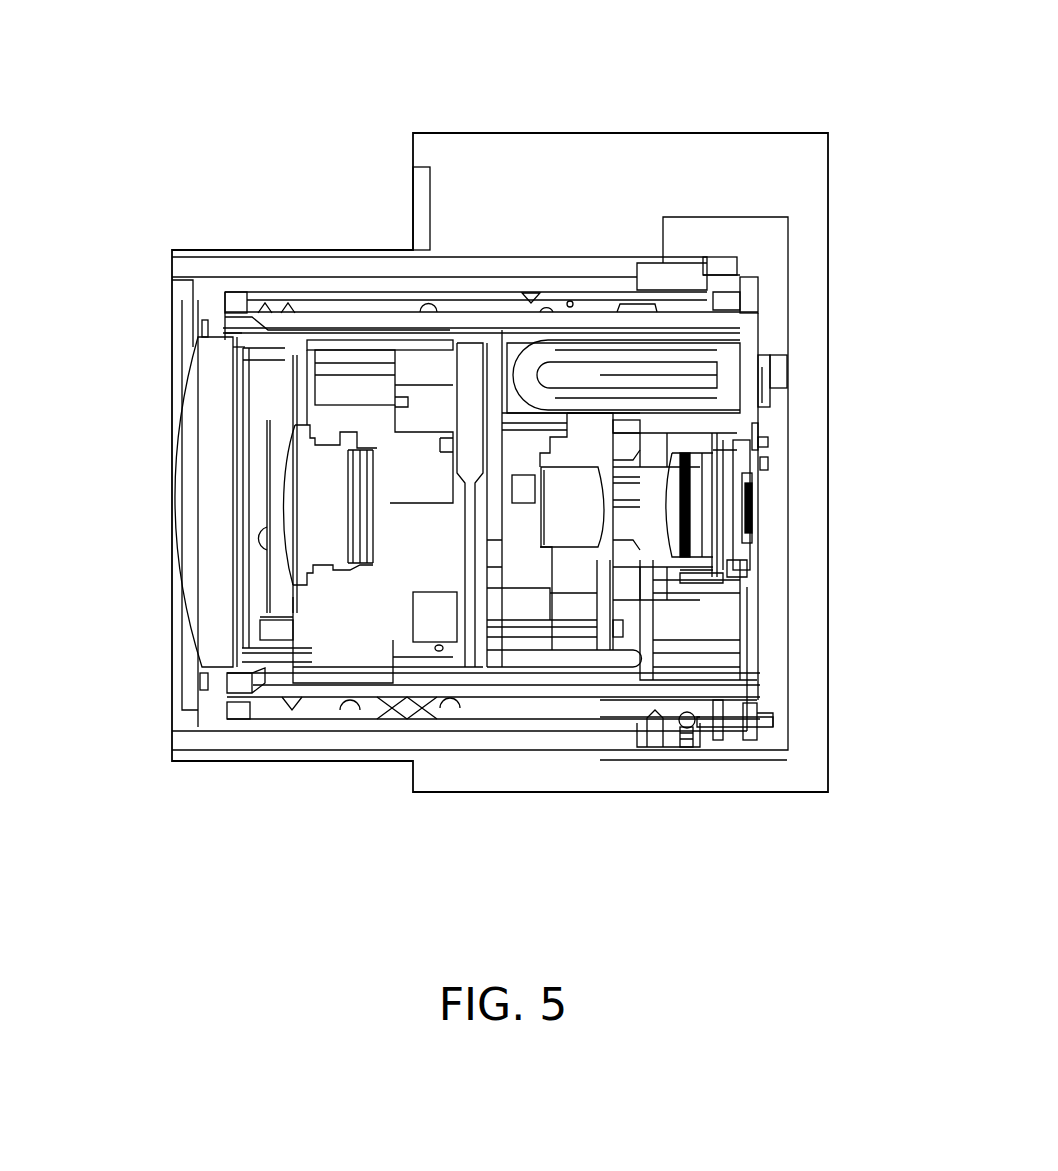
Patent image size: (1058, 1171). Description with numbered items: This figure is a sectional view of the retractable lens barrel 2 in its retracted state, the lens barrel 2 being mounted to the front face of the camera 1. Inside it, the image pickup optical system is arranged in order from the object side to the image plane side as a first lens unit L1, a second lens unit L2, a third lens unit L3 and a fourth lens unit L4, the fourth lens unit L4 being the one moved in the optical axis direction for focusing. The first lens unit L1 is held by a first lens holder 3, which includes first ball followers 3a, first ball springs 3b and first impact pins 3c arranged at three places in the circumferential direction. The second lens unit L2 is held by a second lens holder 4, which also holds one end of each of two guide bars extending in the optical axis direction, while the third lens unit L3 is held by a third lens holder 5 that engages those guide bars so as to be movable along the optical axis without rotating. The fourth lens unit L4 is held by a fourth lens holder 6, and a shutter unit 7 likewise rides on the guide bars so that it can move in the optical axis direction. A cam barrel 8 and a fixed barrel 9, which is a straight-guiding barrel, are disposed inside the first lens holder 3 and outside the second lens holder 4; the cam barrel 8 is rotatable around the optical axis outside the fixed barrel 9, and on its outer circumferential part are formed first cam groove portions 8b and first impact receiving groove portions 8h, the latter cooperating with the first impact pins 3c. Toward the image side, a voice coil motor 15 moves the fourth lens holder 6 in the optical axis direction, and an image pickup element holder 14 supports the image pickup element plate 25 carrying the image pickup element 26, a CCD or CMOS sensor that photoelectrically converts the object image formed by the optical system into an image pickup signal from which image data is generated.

The camera 1 is at (828, 230).
The lens barrel 2 is at (355, 805).
The first lens holder 3 is at (213, 297).
The first ball followers 3a is at (727, 725).
The first ball springs 3b is at (720, 710).
The first impact pins 3c is at (671, 733).
The second lens holder 4 is at (297, 340).
The third lens holder 5 is at (592, 437).
The fourth lens holder 6 is at (777, 700).
The shutter unit 7 is at (470, 363).
The cam barrel 8 is at (373, 300).
The first cam groove portions 8b is at (753, 693).
The first impact receiving groove portions 8h is at (650, 712).
The fixed barrel 9 is at (603, 320).
The image pickup element holder 14 is at (753, 607).
The voice coil motor 15 is at (667, 370).
The image pickup element plate 25 is at (757, 510).
The image pickup element 26 is at (753, 480).
The first lens unit L1 is at (210, 500).
The second lens unit L2 is at (317, 587).
The third lens unit L3 is at (573, 517).
The fourth lens unit L4 is at (690, 720).